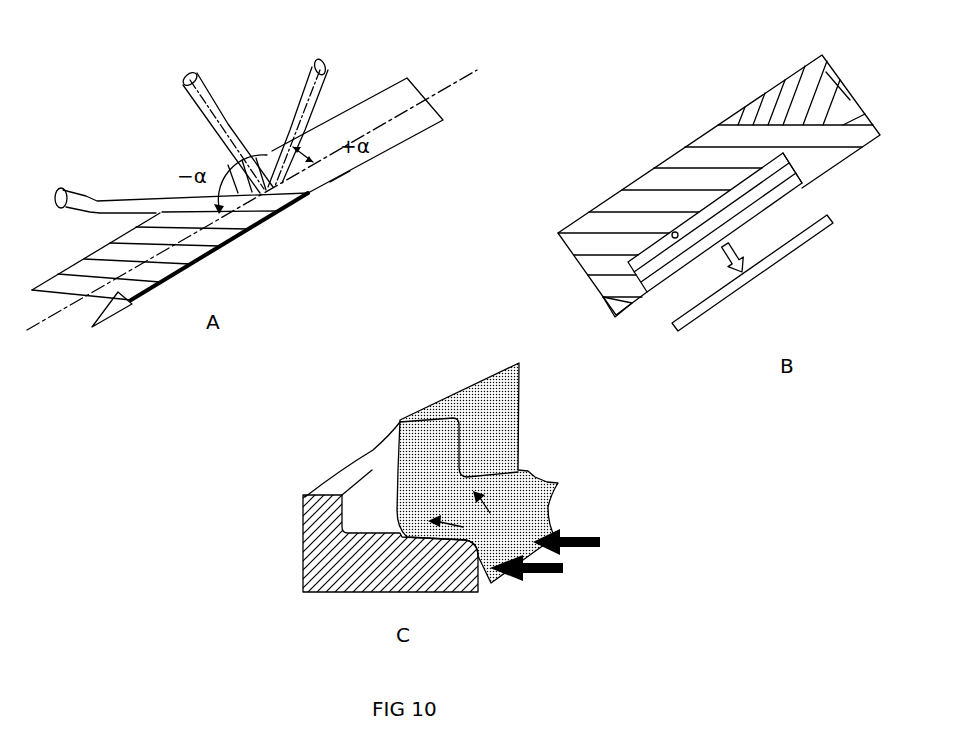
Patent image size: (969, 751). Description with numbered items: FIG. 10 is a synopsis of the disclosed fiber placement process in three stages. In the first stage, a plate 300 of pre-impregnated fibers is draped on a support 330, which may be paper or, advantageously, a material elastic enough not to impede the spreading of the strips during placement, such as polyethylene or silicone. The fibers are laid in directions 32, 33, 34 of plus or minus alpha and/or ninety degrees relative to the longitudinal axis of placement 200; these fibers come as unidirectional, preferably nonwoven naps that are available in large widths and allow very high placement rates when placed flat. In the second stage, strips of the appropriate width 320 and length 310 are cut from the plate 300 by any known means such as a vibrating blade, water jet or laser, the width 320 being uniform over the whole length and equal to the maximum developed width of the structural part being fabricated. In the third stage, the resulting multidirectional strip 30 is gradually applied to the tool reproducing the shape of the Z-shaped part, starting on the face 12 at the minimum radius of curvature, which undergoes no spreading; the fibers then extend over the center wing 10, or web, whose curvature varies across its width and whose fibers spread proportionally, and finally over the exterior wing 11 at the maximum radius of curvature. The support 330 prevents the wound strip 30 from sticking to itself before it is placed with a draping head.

The center wing 10 is at (318, 530).
The exterior wing 11 is at (372, 500).
The wing 12 is at (555, 535).
The multidirectional strip 30 is at (783, 250).
The fiber direction 32 is at (200, 93).
The fiber direction 33 is at (312, 80).
The fiber direction 34 is at (80, 191).
The longitudinal axis of placement 200 is at (447, 86).
The plate 300 is at (683, 137).
The length 310 is at (757, 174).
The width 320 is at (790, 176).
The support 330 is at (347, 162).